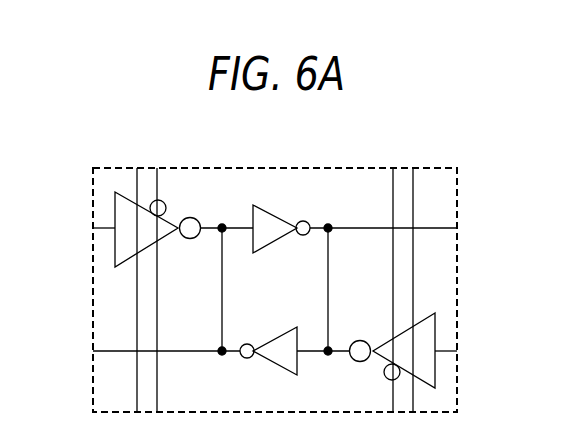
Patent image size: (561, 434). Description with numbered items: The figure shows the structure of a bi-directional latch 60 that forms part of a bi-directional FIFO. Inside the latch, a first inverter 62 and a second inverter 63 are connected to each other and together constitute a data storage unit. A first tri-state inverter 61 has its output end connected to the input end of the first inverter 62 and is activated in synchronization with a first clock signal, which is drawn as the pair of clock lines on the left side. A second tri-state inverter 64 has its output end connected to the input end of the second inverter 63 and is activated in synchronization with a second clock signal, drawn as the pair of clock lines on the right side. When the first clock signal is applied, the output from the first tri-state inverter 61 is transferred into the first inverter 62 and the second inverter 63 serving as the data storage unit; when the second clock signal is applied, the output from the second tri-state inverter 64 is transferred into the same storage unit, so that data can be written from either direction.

The bi-directional latch 60 is at (288, 268).
The first tri-state inverter 61 is at (115, 196).
The first inverter 62 is at (254, 206).
The second inverter 63 is at (299, 365).
The second tri-state inverter 64 is at (437, 320).